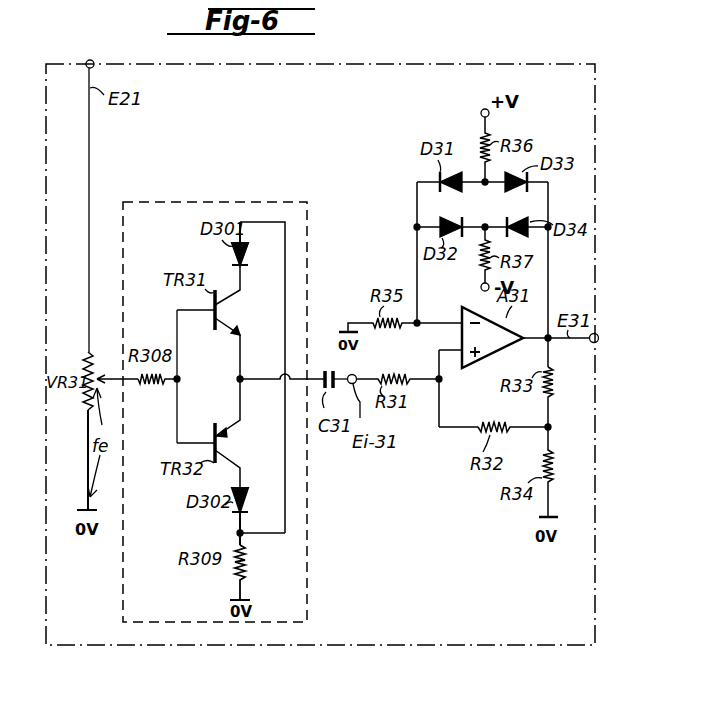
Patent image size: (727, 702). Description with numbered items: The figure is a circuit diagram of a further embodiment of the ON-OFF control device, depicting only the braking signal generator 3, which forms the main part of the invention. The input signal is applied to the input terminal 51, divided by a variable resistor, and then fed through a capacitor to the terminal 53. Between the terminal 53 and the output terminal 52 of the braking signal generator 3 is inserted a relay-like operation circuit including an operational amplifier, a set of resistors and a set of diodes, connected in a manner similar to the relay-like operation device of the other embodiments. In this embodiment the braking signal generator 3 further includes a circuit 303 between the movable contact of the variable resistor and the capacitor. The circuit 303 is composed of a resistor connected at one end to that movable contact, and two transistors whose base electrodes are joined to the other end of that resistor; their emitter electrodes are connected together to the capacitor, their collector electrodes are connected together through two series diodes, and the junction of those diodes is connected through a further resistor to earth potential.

The braking signal generator 3 is at (595, 572).
The circuit 303 is at (307, 517).
The input terminal 51 is at (94, 60).
The output terminal 52 is at (599, 338).
The terminal 53 is at (355, 375).